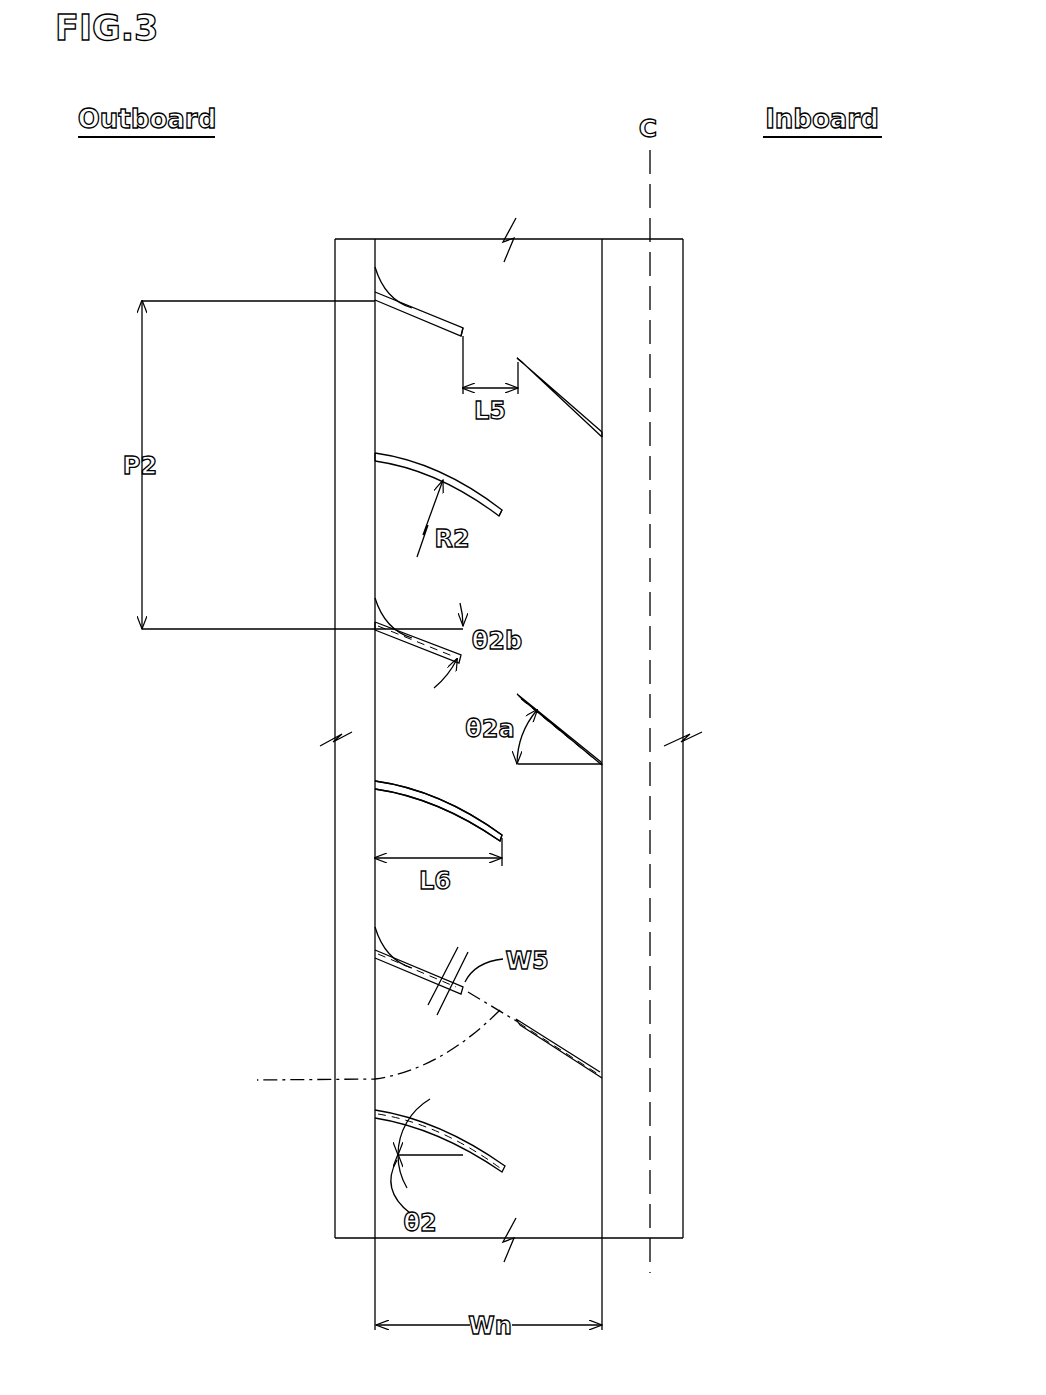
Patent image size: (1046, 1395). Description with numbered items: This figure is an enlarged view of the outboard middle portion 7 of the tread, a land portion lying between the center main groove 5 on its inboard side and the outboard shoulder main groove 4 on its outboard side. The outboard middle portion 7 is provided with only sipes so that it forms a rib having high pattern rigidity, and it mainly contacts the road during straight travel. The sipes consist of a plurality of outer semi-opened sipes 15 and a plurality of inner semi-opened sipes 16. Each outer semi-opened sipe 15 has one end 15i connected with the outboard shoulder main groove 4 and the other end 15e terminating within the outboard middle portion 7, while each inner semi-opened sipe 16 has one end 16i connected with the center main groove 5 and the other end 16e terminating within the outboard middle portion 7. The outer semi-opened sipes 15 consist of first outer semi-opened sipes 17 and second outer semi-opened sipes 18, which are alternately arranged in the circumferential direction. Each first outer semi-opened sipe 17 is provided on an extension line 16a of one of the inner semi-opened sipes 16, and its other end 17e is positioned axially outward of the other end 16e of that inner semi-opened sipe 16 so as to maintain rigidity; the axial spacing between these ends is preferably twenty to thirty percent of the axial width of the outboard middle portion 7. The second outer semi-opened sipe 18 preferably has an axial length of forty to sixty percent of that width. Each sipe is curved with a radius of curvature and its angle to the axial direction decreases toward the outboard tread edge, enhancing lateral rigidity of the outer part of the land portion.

The outboard shoulder main groove 4 is at (352, 272).
The center main groove 5 is at (636, 275).
The outboard middle portion 7 is at (434, 278).
The outer semi-opened sipe 15 is at (417, 469).
The one end of outer semi-opened sipe 15i is at (375, 455).
The other end of outer semi-opened sipe 15e is at (502, 512).
The inner semi-opened sipe 16 is at (560, 385).
The one end of inner semi-opened sipe 16i is at (602, 434).
The other end of inner semi-opened sipe 16e is at (519, 359).
The extension line of inner semi-opened sipe 16a is at (355, 1043).
The first outer semi-opened sipe 17 is at (405, 312).
The other end of first outer semi-opened sipe 17e is at (463, 334).
The second outer semi-opened sipe 18 is at (400, 815).